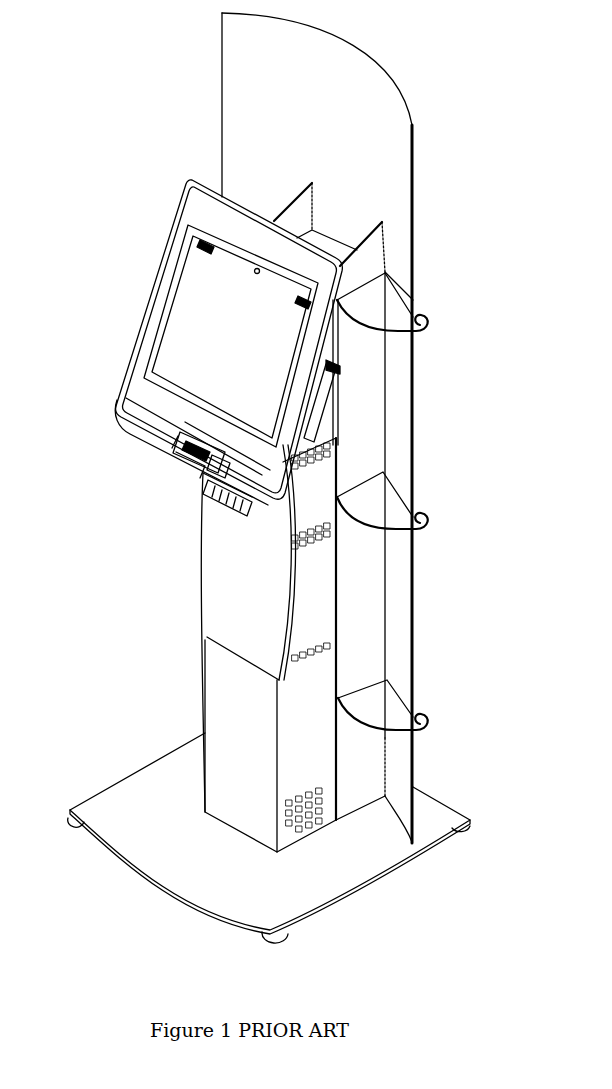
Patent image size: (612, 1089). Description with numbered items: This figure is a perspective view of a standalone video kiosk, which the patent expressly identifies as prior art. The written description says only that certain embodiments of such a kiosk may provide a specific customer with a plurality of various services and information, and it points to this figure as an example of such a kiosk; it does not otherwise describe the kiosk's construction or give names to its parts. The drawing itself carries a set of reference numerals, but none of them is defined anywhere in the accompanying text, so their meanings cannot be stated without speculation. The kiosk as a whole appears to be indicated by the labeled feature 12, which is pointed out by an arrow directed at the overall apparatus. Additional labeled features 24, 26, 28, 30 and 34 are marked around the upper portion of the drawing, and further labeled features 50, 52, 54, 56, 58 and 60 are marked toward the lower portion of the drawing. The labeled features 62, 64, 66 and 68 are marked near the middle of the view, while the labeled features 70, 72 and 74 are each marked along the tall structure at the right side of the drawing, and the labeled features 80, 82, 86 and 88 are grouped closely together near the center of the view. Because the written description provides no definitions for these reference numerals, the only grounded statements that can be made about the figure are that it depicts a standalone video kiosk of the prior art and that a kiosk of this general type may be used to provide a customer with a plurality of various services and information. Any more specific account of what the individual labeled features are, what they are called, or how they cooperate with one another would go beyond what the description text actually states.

The kiosk 12 is at (139, 74).
The display screen 24 is at (200, 287).
The mounting arm 26 is at (340, 375).
The keyboard 28 is at (195, 458).
The card reader 30 is at (210, 515).
The display bezel 34 is at (188, 232).
The base 50 is at (269, 838).
The base plate 52 is at (226, 832).
The pedestal column 54 is at (215, 770).
The lower access panel 56 is at (240, 660).
The cover 58 is at (300, 585).
The upper housing 60 is at (203, 561).
The display assembly 62 is at (197, 338).
The lower housing 64 is at (140, 393).
The mounting bracket 66 is at (325, 420).
The display housing 68 is at (190, 193).
The back panel 70 is at (318, 200).
The hook 72 is at (422, 316).
The panel top 74 is at (400, 160).
The trackball 80 is at (205, 472).
The tray 82 is at (200, 465).
The speaker 86 is at (130, 418).
The input device 88 is at (185, 448).